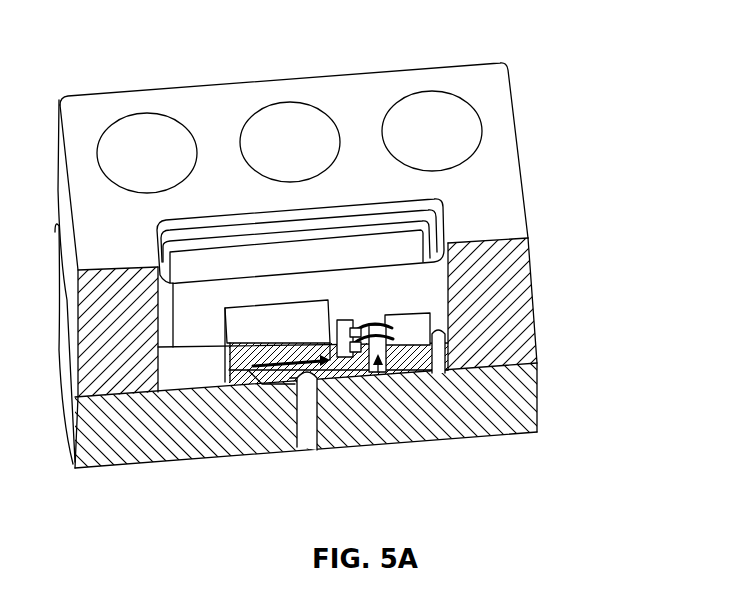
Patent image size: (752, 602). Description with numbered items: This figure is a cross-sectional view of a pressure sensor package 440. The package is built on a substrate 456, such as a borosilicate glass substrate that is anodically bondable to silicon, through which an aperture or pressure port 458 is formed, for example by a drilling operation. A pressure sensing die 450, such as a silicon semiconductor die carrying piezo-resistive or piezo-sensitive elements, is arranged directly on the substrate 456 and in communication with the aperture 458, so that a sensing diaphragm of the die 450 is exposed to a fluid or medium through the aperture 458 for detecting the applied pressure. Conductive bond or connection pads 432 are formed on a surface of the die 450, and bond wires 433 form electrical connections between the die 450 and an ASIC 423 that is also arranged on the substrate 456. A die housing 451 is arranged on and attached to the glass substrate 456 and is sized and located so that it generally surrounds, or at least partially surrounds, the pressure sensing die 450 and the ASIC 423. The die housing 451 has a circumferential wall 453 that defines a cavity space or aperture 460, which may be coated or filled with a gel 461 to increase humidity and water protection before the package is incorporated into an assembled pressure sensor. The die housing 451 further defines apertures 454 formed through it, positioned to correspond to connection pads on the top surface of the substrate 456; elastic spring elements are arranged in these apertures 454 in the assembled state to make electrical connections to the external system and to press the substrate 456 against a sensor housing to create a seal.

The pressure sensor package 440 is at (521, 51).
The die housing 451 is at (503, 130).
The circumferential wall 453 is at (447, 212).
The apertures 454 is at (432, 108).
The cavity space or aperture 460 is at (256, 216).
The gel 461 is at (395, 245).
The ASIC 423 is at (418, 312).
The conductive bond or connection pads 432 is at (362, 370).
The bond wires 433 is at (378, 370).
The pressure sensing die 450 is at (323, 370).
The substrate 456 is at (527, 400).
The aperture or pressure port 458 is at (303, 437).